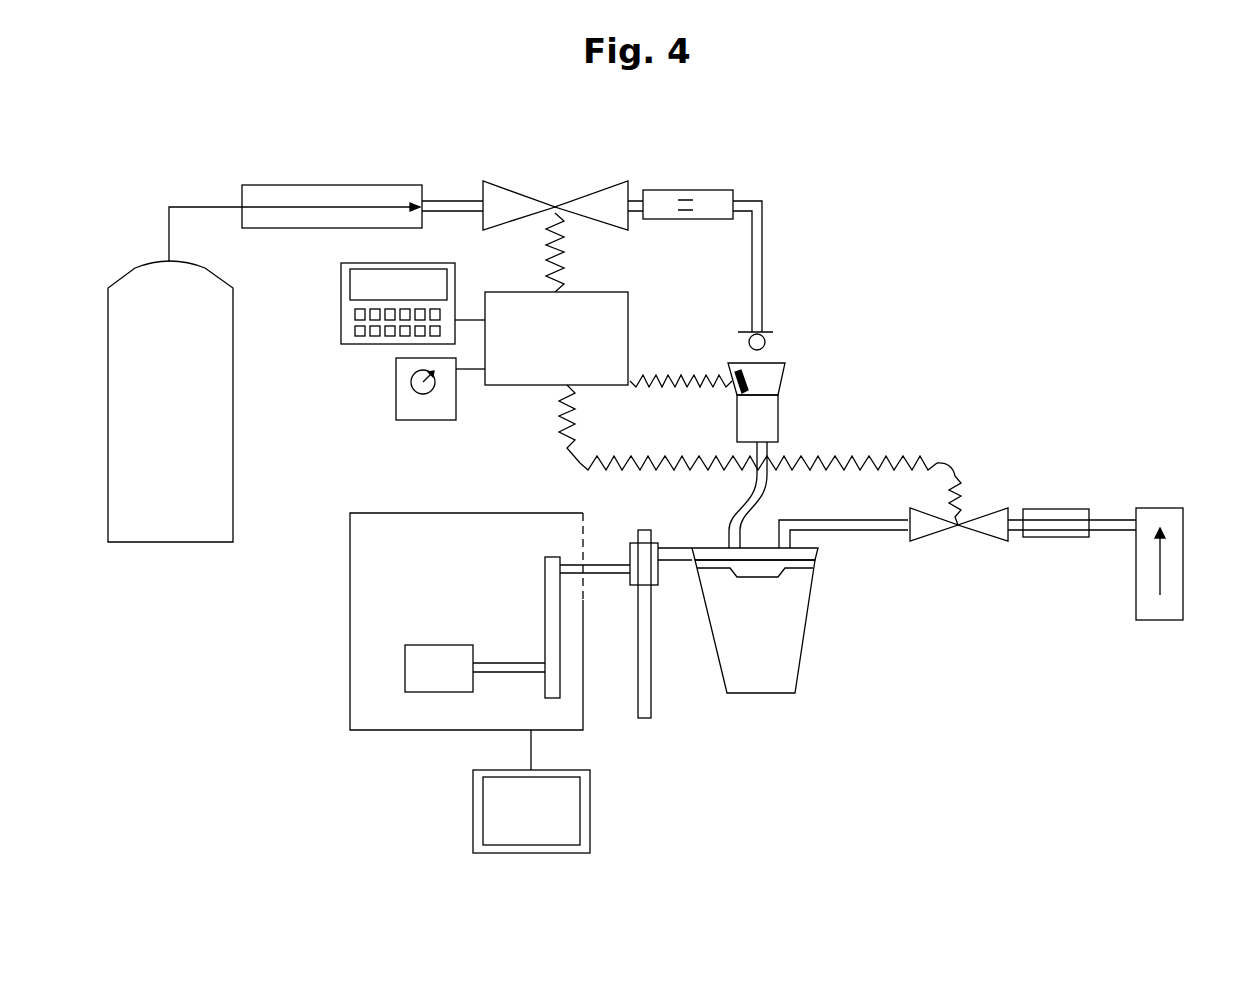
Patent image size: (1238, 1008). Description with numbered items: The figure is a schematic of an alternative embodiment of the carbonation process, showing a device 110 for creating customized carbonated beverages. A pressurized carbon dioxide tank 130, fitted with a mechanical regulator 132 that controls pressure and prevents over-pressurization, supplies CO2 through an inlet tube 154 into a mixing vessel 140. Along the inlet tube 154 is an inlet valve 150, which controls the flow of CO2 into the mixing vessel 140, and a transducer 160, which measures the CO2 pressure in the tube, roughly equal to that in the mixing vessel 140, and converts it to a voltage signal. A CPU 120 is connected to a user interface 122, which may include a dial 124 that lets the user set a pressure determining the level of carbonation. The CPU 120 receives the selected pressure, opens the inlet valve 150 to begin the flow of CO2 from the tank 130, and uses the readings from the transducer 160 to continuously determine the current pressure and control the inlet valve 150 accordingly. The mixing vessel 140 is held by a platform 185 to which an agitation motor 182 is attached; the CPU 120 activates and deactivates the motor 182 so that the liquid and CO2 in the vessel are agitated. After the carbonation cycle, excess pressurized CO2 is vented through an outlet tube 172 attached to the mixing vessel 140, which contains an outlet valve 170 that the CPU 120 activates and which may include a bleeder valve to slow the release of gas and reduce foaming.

The device 110 is at (948, 236).
The CPU 120 is at (723, 408).
The user interface 122 is at (339, 313).
The dial 124 is at (394, 391).
The pressurized carbon dioxide tank 130 is at (139, 546).
The mechanical regulator 132 is at (300, 182).
The mixing vessel 140 is at (810, 672).
The inlet valve 150 is at (549, 180).
The inlet tube 154 is at (767, 277).
The transducer 160 is at (792, 399).
The outlet valve 170 is at (968, 504).
The outlet tube 172 is at (857, 530).
The agitation motor 182 is at (470, 683).
The platform 185 is at (568, 558).